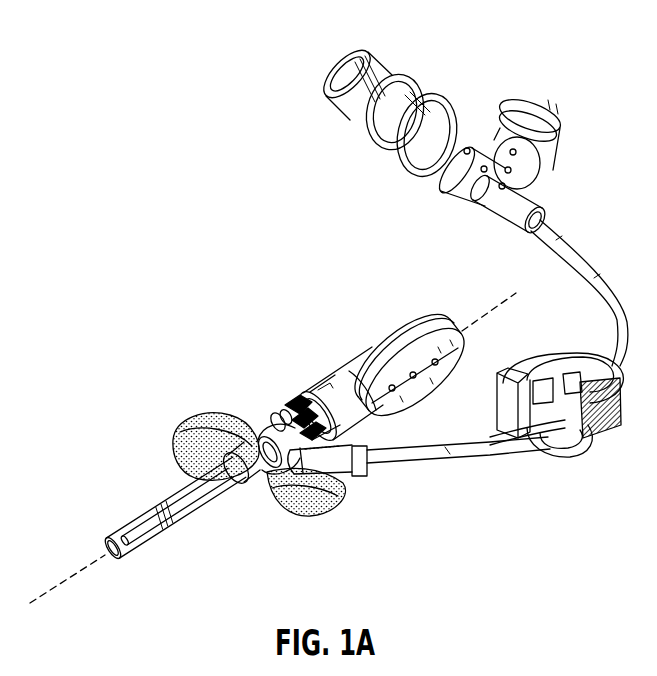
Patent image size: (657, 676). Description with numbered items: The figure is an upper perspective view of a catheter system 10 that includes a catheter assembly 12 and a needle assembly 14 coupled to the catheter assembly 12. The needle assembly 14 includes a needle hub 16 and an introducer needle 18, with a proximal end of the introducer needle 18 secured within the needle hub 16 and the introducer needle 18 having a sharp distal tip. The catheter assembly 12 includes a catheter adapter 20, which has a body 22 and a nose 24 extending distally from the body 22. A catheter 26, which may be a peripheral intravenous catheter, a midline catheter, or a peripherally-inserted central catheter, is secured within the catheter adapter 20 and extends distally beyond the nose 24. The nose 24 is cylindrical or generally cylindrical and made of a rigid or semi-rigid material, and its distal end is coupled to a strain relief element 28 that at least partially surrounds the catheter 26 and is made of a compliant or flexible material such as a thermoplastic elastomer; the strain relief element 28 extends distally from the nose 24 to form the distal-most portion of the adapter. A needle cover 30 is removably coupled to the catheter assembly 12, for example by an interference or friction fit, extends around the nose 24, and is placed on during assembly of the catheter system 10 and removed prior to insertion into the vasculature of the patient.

The catheter system 10 is at (505, 46).
The catheter assembly 12 is at (272, 401).
The needle assembly 14 is at (416, 318).
The needle hub 16 is at (363, 370).
The introducer needle 18 is at (145, 523).
The catheter adapter 20 is at (305, 490).
The body 22 is at (262, 430).
The nose 24 is at (243, 467).
The catheter 26 is at (181, 505).
The strain relief element 28 is at (227, 490).
The needle cover 30 is at (133, 553).